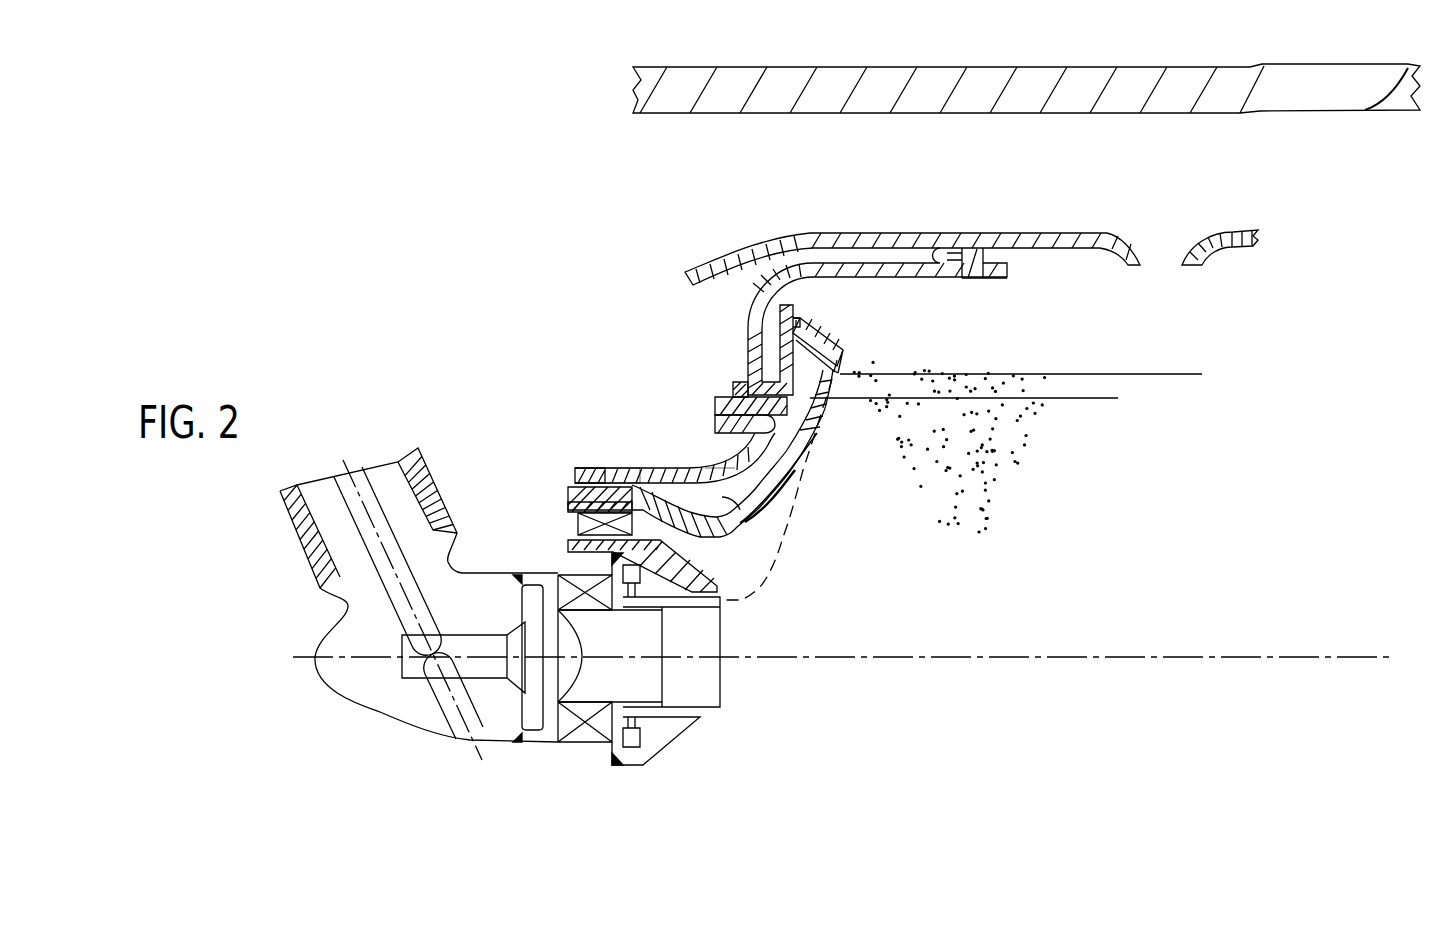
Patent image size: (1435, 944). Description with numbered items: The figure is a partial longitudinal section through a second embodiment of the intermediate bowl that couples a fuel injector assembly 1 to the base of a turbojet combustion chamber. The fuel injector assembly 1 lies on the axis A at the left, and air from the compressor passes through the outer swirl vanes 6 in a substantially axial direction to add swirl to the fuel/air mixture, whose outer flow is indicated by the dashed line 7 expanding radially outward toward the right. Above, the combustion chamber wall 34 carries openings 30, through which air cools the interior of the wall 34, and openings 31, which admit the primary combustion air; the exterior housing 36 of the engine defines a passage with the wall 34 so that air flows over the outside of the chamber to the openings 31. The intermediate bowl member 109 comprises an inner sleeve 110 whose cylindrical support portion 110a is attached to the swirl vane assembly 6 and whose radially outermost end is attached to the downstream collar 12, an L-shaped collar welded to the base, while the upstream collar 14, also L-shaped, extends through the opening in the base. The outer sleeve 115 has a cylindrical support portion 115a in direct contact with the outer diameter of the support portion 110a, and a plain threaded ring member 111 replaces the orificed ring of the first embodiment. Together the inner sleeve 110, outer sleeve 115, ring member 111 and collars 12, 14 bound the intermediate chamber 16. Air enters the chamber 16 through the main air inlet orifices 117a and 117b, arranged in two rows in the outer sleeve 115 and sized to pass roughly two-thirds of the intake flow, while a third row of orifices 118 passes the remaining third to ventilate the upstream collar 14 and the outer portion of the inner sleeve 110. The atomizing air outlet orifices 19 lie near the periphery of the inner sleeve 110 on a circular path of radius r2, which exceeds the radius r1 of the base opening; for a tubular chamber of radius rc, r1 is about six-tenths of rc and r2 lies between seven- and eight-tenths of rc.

The fuel injector assembly 1 is at (393, 712).
The outer swirl vanes 6 is at (580, 525).
The dashed line of outer flow 7 is at (777, 552).
The downstream collar 12 is at (797, 318).
The upstream collar 14 is at (738, 382).
The intermediate chamber 16 is at (723, 498).
The atomizing air outlet orifices 19 is at (837, 372).
The openings 30 is at (972, 253).
The openings 31 is at (1167, 258).
The combustion chamber wall 34 is at (925, 233).
The exterior housing 36 is at (770, 113).
The intermediate bowl member 109 is at (786, 512).
The inner sleeve 110 is at (807, 470).
The cylindrical support portion 110a is at (570, 497).
The ring member 111 is at (580, 468).
The outer sleeve 115 is at (682, 502).
The cylindrical support portion 115a is at (623, 468).
The main air inlet orifice 117a is at (675, 477).
The main air inlet orifice 117b is at (721, 456).
The third row of air inlet orifices 118 is at (722, 417).
The axis A is at (802, 656).
The radius of opening r1 is at (1100, 655).
The radius of circular path of orifices r2 is at (1175, 376).
The radius of combustion chamber rc is at (1233, 655).